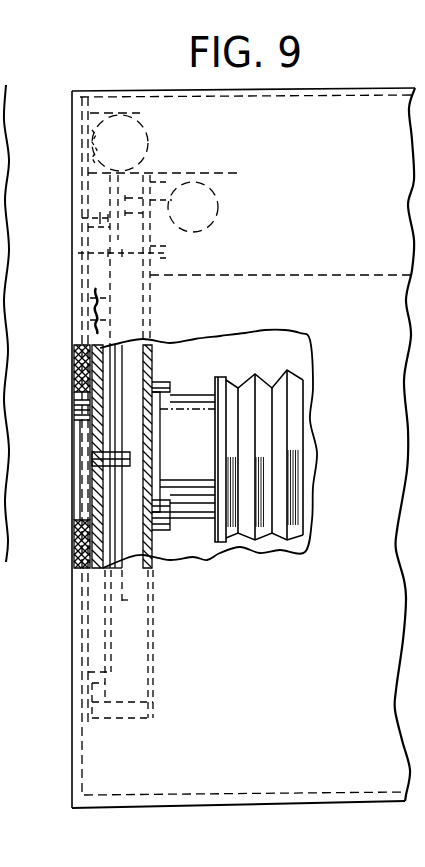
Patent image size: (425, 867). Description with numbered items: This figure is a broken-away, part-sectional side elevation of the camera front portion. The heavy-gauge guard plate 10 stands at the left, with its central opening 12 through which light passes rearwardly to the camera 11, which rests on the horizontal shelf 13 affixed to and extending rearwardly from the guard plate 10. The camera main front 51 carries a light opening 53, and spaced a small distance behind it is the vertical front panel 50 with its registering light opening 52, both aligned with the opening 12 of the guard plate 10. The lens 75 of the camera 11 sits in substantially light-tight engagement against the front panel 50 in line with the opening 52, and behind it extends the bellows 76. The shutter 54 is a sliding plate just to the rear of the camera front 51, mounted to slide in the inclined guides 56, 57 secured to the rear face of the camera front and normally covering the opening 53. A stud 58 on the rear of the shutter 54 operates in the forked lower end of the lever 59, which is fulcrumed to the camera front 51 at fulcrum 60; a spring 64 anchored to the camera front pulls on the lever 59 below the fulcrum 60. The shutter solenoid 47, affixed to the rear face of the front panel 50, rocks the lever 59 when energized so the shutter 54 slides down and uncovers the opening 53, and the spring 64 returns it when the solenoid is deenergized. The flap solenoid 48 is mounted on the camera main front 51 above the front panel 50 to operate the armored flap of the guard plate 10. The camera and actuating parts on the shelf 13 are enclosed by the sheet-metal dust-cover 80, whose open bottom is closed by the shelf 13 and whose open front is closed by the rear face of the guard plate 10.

The guard plate 10 is at (98, 64).
The dust-cover 80 is at (385, 88).
The flap solenoid 48 is at (130, 145).
The shutter solenoid 47 is at (212, 207).
The inclined guide 56 is at (82, 227).
The fulcrum 60 is at (80, 259).
The spring 64 is at (92, 297).
The lever 59 is at (118, 370).
The front panel 50 is at (155, 366).
The camera main front 51 is at (80, 365).
The light opening 53 is at (76, 415).
The shutter 54 is at (88, 429).
The stud 58 is at (100, 457).
The opening 12 is at (80, 495).
The lens 75 is at (201, 473).
The light opening 52 is at (166, 520).
The bellows 76 is at (282, 466).
The camera 11 is at (263, 368).
The shelf 13 is at (238, 796).
The inclined guide 57 is at (92, 683).